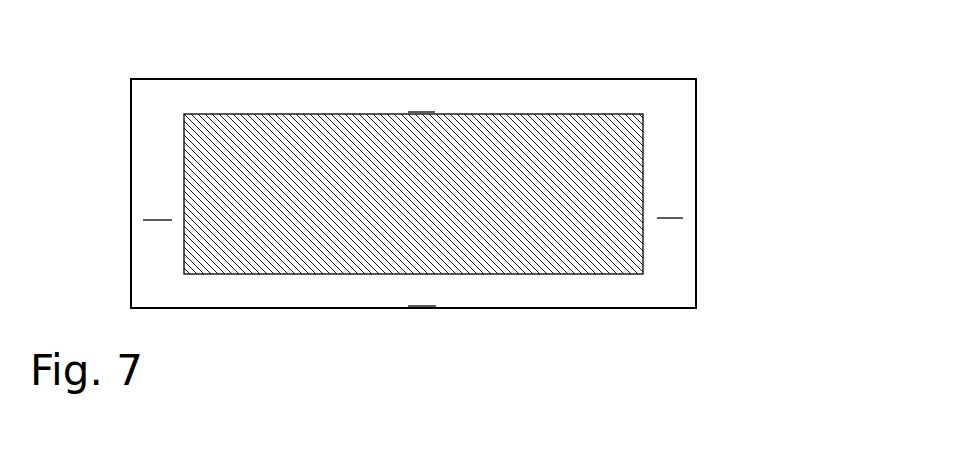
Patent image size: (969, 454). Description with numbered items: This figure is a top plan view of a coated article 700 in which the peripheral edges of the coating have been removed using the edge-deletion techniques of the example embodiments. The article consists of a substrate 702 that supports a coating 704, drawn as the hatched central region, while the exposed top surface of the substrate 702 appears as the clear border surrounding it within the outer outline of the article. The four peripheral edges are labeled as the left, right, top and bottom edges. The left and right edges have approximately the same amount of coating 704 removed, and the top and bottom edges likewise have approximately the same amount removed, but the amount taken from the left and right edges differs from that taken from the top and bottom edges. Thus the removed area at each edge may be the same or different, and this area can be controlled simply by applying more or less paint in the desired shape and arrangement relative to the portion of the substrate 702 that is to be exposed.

The coated article 700 is at (700, 52).
The substrate 702 is at (696, 193).
The coating 704 is at (602, 133).